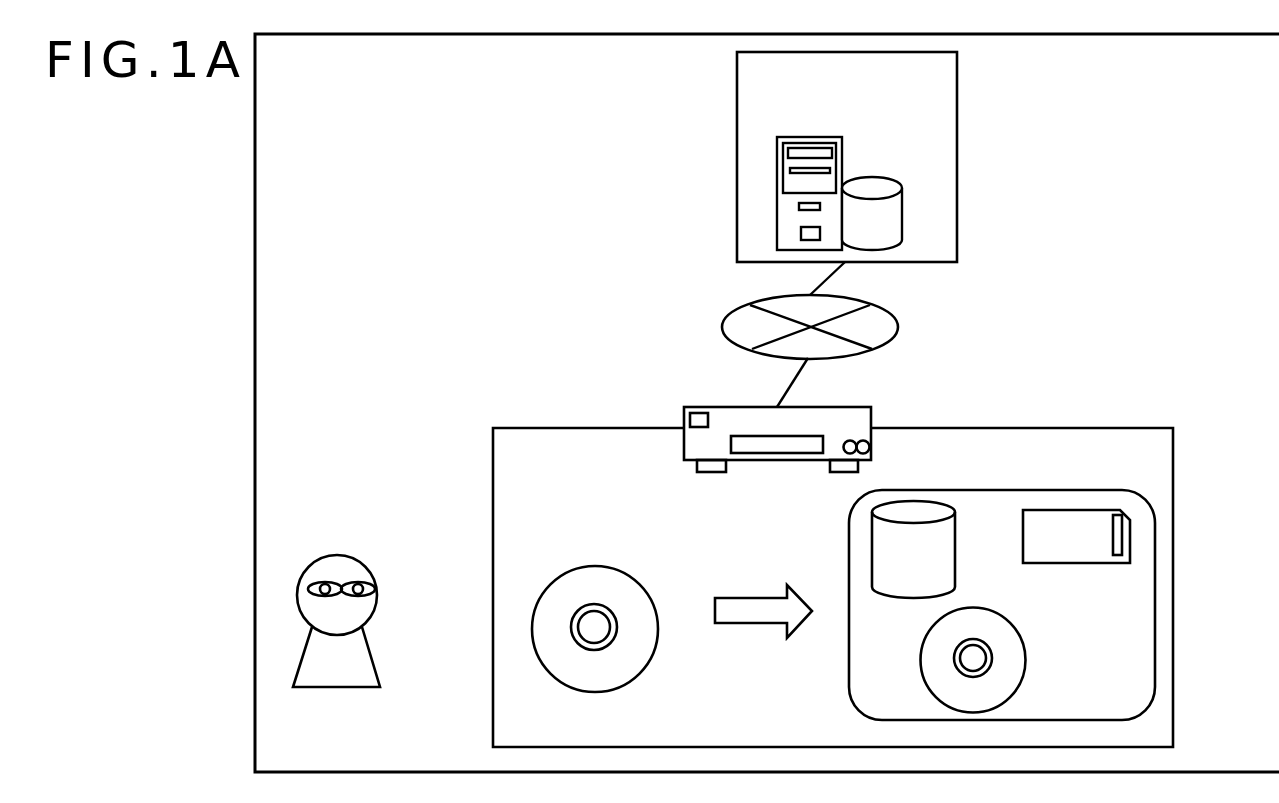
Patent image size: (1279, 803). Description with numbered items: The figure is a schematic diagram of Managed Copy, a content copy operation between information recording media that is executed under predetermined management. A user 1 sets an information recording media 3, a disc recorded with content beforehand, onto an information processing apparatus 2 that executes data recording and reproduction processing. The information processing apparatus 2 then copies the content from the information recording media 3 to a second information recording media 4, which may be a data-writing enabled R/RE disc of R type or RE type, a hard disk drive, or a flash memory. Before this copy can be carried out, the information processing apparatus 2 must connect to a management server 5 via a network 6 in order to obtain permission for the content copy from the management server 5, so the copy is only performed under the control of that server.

The user 1 is at (350, 555).
The information processing apparatus 2 is at (871, 415).
The information recording media 3 is at (593, 565).
The second information recording media 4 is at (1030, 490).
The management server 5 is at (957, 163).
The network 6 is at (723, 323).